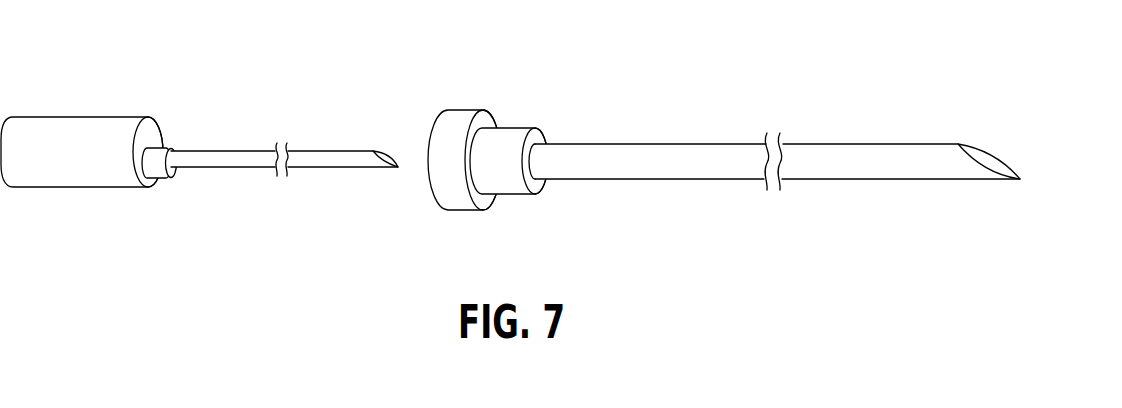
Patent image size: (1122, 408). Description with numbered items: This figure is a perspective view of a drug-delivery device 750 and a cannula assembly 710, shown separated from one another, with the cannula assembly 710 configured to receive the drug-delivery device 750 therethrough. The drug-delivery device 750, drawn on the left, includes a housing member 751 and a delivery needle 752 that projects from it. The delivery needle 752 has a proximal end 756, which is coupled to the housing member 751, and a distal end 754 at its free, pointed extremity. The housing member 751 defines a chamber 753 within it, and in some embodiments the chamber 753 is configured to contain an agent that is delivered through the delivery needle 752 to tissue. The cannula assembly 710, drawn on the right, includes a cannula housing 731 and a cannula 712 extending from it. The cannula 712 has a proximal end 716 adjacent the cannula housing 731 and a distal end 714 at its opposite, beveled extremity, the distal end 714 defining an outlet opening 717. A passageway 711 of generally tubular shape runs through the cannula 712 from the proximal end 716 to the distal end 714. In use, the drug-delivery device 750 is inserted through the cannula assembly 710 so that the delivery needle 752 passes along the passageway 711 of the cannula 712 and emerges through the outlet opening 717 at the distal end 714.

The drug-delivery device 750 is at (206, 136).
The housing member 751 is at (76, 188).
The delivery needle 752 is at (291, 158).
The chamber 753 is at (63, 135).
The distal end 754 is at (374, 167).
The proximal end 756 is at (183, 158).
The cannula assembly 710 is at (746, 123).
The cannula housing 731 is at (516, 129).
The proximal end 716 is at (553, 148).
The cannula 712 is at (796, 139).
The passageway 711 is at (822, 158).
The distal end 714 is at (952, 153).
The outlet opening 717 is at (1004, 155).